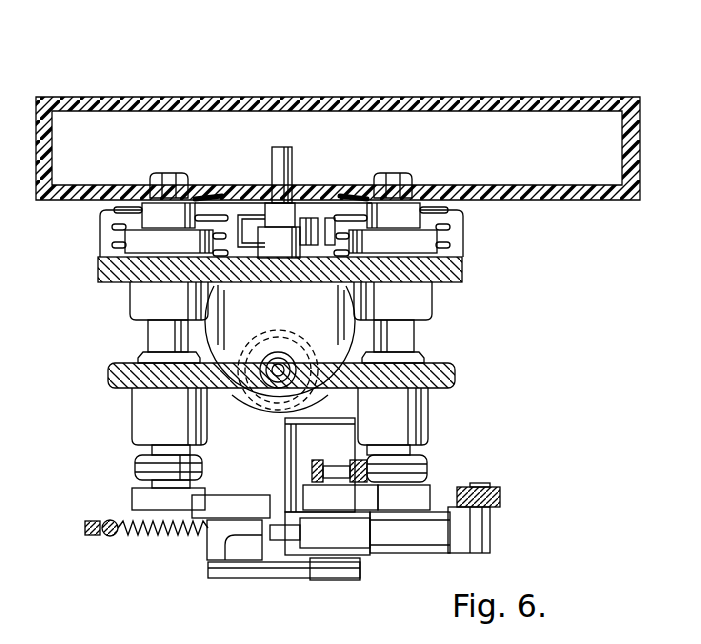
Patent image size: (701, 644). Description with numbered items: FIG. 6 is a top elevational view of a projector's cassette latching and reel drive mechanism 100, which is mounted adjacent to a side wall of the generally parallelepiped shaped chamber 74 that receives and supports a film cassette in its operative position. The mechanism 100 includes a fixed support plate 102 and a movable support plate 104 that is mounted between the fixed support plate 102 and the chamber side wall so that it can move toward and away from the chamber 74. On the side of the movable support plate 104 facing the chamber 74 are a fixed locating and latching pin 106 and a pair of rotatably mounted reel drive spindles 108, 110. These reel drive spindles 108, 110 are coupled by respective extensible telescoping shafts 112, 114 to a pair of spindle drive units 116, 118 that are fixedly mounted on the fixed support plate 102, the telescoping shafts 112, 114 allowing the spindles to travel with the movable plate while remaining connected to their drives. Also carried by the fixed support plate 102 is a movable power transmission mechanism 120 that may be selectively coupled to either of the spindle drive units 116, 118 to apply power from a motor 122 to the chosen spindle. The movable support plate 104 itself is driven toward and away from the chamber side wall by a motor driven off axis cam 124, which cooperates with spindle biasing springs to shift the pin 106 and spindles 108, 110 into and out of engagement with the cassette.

The chamber 74 is at (586, 130).
The cassette latching and reel drive mechanism 100 is at (512, 350).
The fixed support plate 102 is at (438, 378).
The movable support plate 104 is at (463, 273).
The locating and latching pin 106 is at (276, 160).
The reel drive spindle 108 is at (400, 175).
The reel drive spindle 110 is at (178, 175).
The extensible telescoping shaft 112 is at (400, 343).
The extensible telescoping shaft 114 is at (162, 342).
The spindle drive unit 116 is at (410, 418).
The spindle drive unit 118 is at (158, 423).
The movable power transmission mechanism 120 is at (502, 521).
The motor 122 is at (303, 445).
The motor driven off axis cam 124 is at (222, 330).